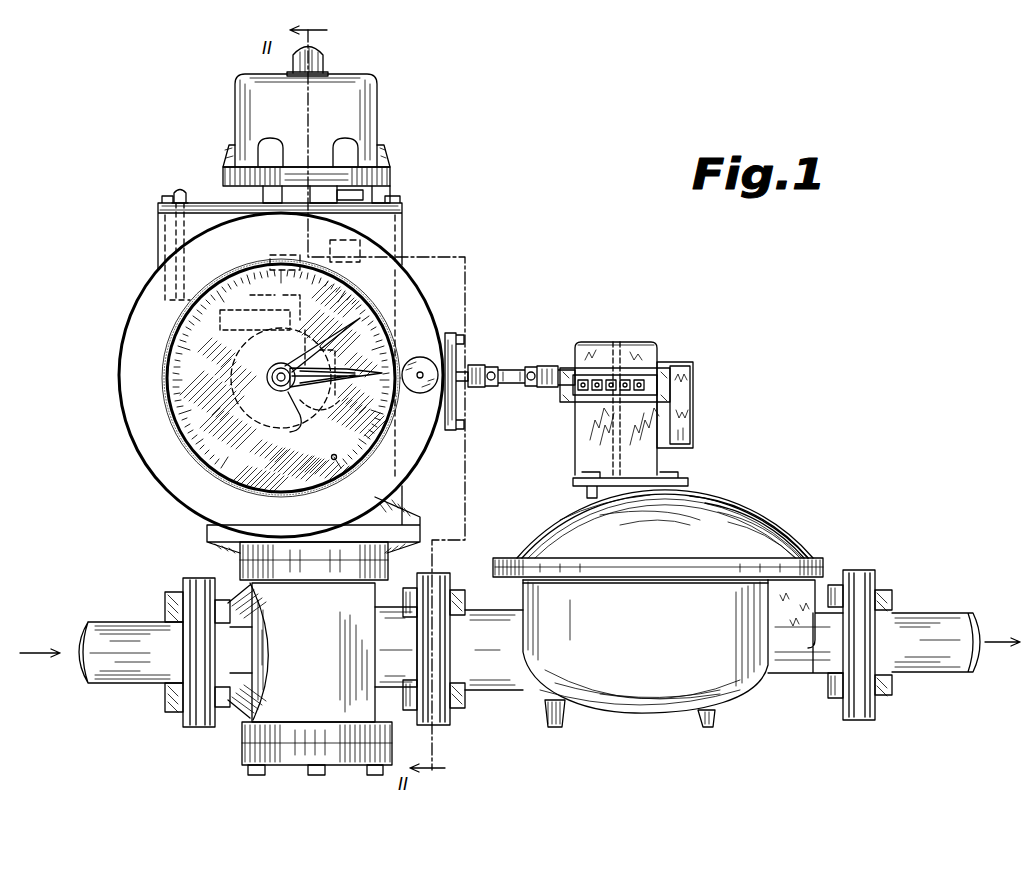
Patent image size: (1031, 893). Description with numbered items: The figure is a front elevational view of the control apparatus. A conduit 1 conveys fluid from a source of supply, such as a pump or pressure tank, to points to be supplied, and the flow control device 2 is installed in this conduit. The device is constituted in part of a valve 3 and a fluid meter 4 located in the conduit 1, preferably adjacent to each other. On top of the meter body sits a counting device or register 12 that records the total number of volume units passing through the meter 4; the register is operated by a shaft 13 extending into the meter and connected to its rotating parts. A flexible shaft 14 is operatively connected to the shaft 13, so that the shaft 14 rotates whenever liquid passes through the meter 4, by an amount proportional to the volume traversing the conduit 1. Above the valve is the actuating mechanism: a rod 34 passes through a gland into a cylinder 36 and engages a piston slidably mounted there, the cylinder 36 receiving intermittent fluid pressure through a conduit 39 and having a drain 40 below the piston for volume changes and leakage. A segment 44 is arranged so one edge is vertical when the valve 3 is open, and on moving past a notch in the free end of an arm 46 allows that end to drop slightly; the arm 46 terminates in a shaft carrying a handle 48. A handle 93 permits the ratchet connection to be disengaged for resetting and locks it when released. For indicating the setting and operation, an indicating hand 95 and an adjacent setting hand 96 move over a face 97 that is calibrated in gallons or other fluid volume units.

The conduit 1 is at (125, 675).
The flow control device 2 is at (500, 304).
The valve 3 is at (268, 712).
The fluid meter 4 is at (743, 500).
The register 12 is at (655, 372).
The shaft 13 is at (620, 350).
The flexible shaft 14 is at (505, 368).
The rod 34 is at (400, 250).
The cylinder 36 is at (380, 110).
The conduit 39 is at (325, 62).
The drain 40 is at (363, 194).
The segment 44 is at (336, 409).
The arm 46 is at (281, 381).
The handle 48 is at (178, 190).
The handle 93 is at (420, 393).
The indicating hand 95 is at (314, 385).
The setting hand 96 is at (267, 368).
The face 97 is at (180, 440).